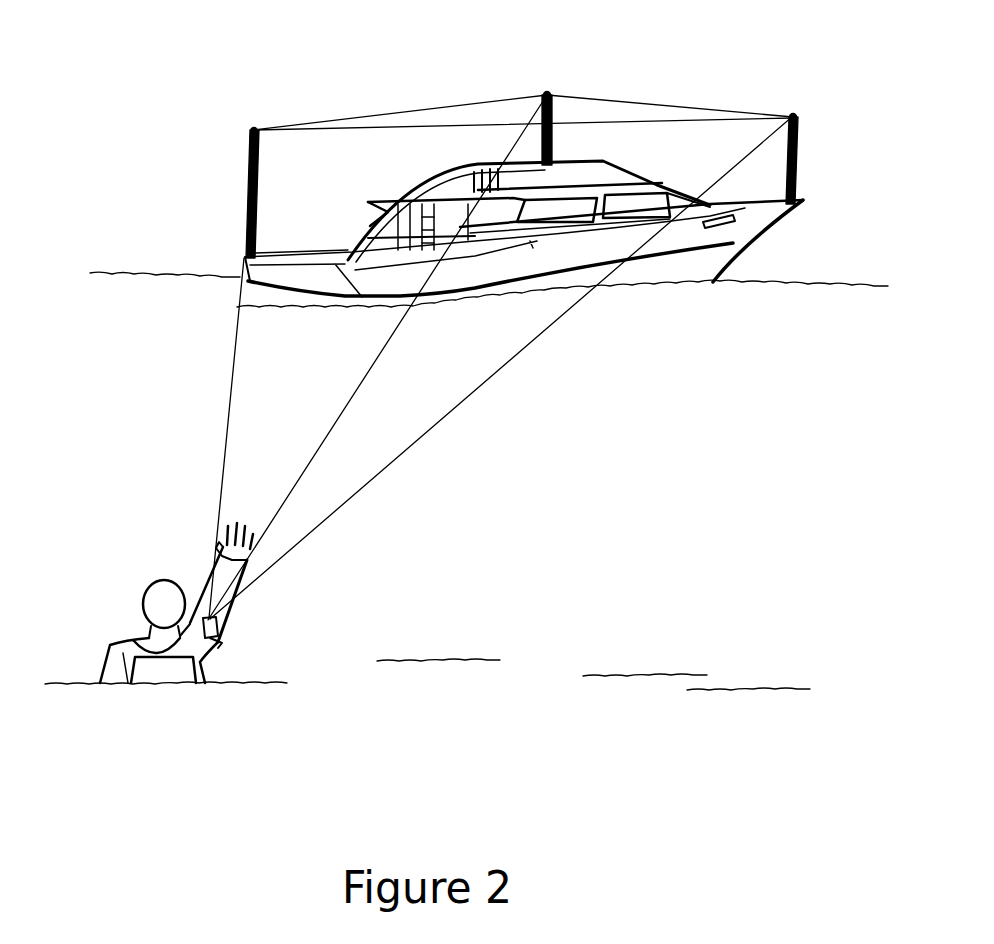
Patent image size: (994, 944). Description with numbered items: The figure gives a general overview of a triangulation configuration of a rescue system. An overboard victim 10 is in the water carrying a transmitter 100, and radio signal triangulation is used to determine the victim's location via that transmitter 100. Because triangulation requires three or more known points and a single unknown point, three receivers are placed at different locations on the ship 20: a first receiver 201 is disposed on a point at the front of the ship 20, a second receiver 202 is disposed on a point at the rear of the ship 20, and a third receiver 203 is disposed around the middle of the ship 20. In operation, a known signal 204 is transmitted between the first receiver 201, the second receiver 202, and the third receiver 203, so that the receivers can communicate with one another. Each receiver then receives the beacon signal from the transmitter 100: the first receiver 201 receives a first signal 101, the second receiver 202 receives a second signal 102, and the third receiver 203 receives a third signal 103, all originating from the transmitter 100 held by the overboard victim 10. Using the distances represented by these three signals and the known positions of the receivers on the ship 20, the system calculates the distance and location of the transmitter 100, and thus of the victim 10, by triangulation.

The overboard victim 10 is at (150, 685).
The ship 20 is at (690, 272).
The transmitter 100 is at (220, 642).
The first signal 101 is at (495, 387).
The second signal 102 is at (219, 390).
The third signal 103 is at (376, 345).
The first receiver 201 is at (797, 160).
The second receiver 202 is at (258, 202).
The third receiver 203 is at (553, 145).
The known signal 204 is at (608, 92).